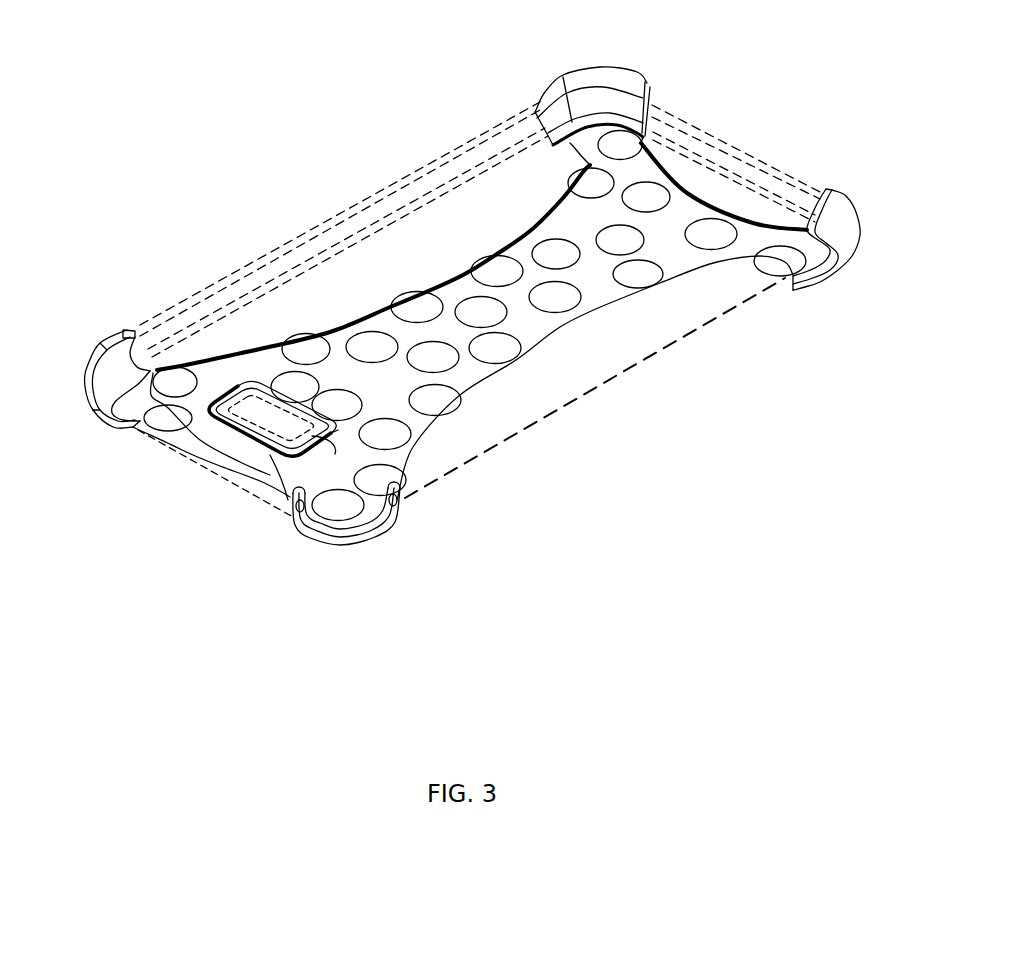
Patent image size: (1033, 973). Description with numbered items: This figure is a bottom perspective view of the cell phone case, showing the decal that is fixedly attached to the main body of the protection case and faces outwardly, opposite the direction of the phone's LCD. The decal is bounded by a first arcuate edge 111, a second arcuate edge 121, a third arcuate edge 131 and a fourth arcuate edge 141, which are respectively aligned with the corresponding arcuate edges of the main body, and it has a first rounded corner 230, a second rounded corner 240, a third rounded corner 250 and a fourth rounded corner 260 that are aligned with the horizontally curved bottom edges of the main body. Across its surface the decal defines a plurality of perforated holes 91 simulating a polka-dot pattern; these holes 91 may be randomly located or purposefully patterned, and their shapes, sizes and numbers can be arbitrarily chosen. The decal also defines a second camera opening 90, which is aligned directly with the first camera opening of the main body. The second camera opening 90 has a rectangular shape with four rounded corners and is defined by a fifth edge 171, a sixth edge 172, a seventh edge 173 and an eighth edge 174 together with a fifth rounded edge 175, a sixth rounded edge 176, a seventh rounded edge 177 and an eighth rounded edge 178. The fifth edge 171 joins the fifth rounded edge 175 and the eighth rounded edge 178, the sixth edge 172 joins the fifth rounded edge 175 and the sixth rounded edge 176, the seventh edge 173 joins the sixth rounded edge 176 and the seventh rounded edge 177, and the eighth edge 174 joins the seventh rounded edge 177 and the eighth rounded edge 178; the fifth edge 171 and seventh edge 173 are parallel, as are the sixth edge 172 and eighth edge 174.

The second camera opening 90 is at (212, 446).
The perforated holes 91 is at (480, 313).
The first arcuate edge 111 is at (385, 312).
The second arcuate edge 121 is at (708, 196).
The third arcuate edge 131 is at (687, 272).
The fourth arcuate edge 141 is at (185, 440).
The fifth edge 171 is at (400, 490).
The sixth edge 172 is at (313, 366).
The seventh edge 173 is at (207, 393).
The eighth edge 174 is at (272, 460).
The fifth rounded edge 175 is at (340, 430).
The sixth rounded edge 176 is at (245, 374).
The seventh rounded edge 177 is at (122, 346).
The eighth rounded edge 178 is at (293, 487).
The first rounded corner 230 is at (168, 422).
The second rounded corner 240 is at (337, 532).
The third rounded corner 250 is at (650, 108).
The fourth rounded corner 260 is at (783, 275).